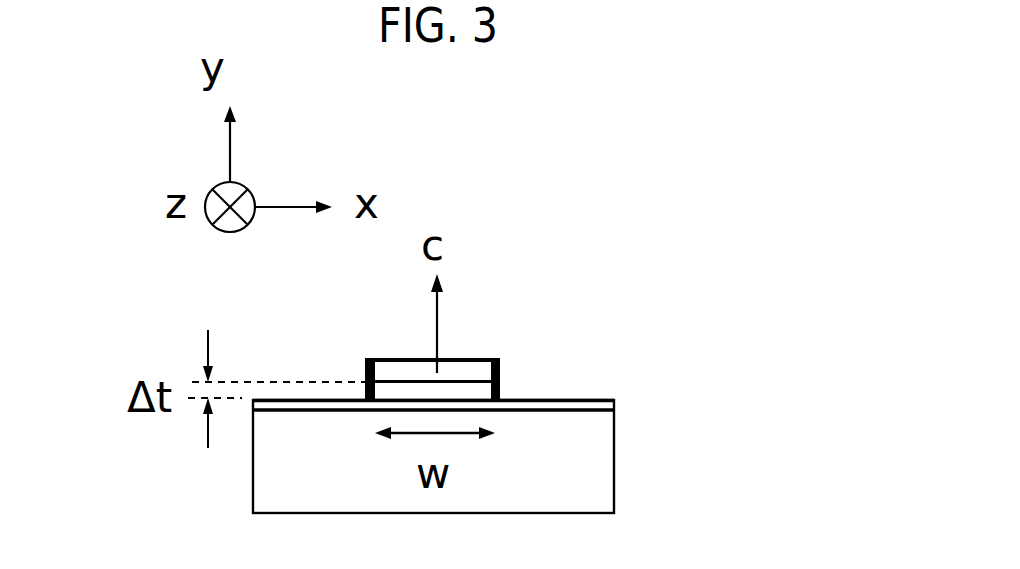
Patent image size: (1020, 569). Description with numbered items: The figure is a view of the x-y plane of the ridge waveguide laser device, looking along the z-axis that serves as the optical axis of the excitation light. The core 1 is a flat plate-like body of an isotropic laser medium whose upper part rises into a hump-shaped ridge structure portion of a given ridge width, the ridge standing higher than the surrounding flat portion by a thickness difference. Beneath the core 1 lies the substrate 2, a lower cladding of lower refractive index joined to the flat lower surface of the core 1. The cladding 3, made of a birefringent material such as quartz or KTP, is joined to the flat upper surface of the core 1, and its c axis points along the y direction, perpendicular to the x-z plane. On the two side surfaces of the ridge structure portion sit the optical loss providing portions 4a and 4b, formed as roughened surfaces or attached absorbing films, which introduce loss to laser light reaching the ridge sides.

The core 1 is at (597, 403).
The substrate 2 is at (597, 460).
The cladding 3 is at (457, 367).
The optical loss providing portion 4a is at (365, 377).
The optical loss providing portion 4b is at (500, 373).